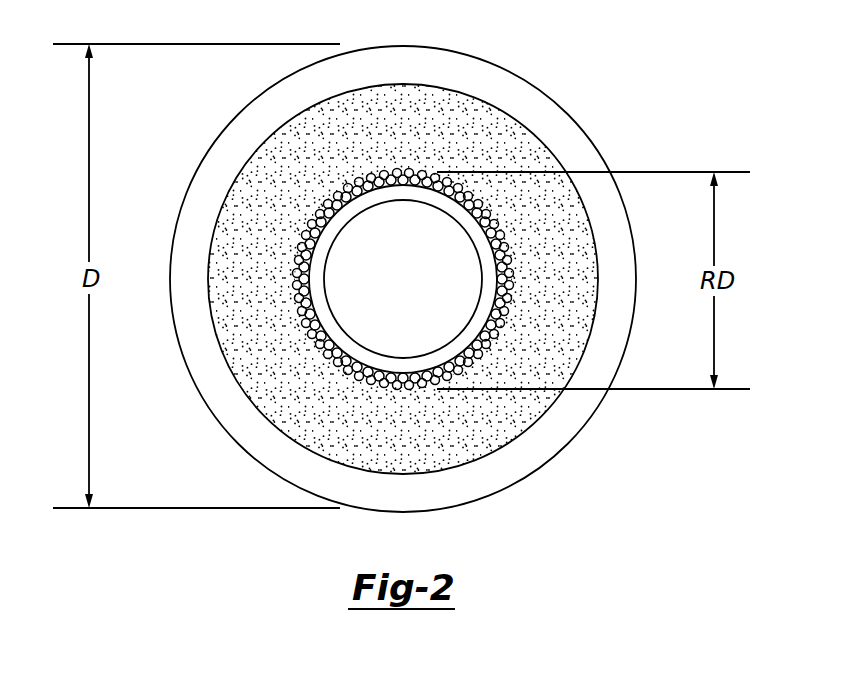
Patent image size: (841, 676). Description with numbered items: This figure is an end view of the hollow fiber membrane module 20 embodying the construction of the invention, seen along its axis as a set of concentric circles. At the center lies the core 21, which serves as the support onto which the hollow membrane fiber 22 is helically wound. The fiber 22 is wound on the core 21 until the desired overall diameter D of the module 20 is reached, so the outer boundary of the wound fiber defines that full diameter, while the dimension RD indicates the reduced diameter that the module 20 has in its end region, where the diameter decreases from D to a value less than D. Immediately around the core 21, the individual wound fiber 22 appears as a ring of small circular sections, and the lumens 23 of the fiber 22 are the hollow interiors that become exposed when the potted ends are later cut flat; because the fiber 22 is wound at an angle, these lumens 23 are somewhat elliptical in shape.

The hollow fiber membrane module 20 is at (612, 62).
The core 21 is at (325, 278).
The hollow membrane fiber 22 is at (297, 292).
The lumens 23 is at (310, 328).